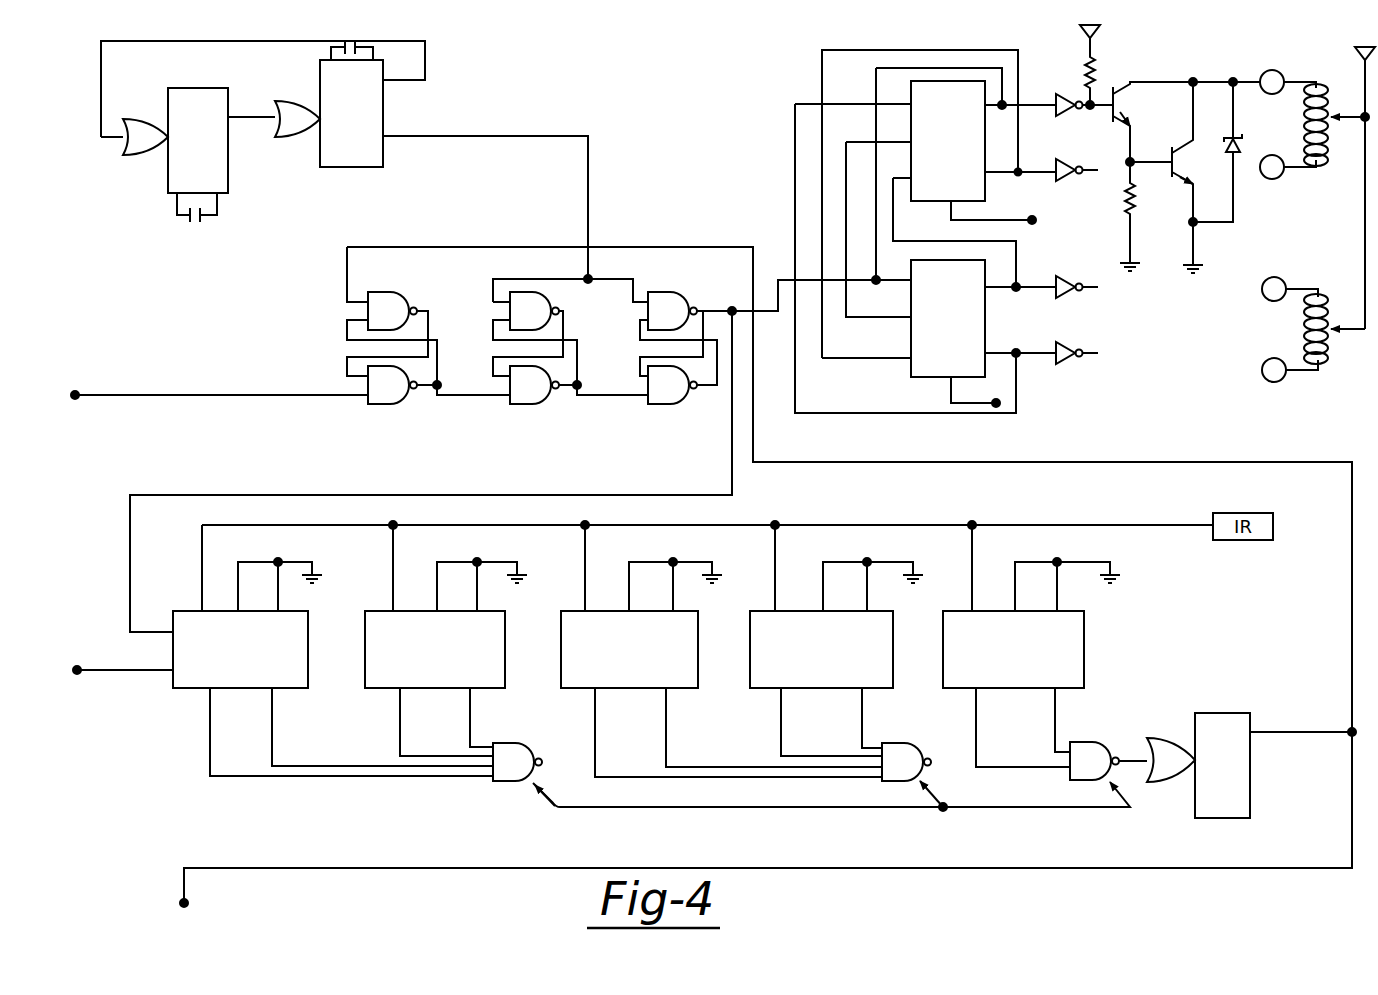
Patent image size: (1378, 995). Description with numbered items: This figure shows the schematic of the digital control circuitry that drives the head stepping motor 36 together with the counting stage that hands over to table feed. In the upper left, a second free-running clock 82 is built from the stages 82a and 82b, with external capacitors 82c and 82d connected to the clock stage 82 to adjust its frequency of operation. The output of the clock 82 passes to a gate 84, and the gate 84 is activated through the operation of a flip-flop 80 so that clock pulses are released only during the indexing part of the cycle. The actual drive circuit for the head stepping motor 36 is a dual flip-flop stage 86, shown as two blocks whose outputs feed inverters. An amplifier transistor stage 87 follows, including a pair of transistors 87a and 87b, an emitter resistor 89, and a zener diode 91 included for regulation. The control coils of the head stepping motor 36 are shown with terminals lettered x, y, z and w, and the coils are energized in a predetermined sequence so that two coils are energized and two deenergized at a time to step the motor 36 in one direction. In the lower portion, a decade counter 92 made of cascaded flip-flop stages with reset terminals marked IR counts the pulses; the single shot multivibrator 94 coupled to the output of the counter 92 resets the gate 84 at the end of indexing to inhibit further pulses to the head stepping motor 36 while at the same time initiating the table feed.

The head stepping motor 36 is at (1327, 56).
The flip-flop 80 is at (404, 406).
The free-running clock 82 is at (270, 148).
The clock stage component 82a is at (168, 181).
The clock stage component 82b is at (352, 167).
The capacitor 82c is at (195, 216).
The capacitor 82d is at (362, 52).
The gate 84 is at (647, 413).
The dual flip-flop stage 86 is at (984, 454).
The transistor stage 87 is at (1188, 157).
The transistor 87a is at (1130, 108).
The transistor 87b is at (1212, 162).
The emitter resistor 89 is at (1127, 200).
The zener diode 91 is at (1240, 138).
The counter 92 is at (649, 848).
The single shot multivibrator 94 is at (1148, 808).